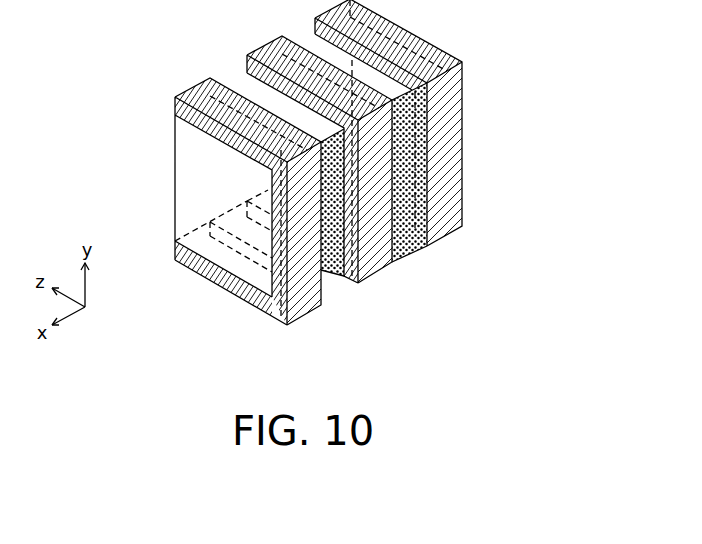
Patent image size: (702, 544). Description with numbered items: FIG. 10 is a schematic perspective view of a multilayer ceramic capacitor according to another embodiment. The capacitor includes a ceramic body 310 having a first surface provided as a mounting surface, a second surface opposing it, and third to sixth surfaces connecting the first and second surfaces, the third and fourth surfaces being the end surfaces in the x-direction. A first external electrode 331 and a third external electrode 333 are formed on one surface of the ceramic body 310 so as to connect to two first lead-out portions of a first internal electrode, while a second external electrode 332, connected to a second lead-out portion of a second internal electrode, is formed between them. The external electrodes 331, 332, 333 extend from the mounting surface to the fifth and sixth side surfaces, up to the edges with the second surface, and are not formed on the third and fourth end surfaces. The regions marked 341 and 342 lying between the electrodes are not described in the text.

The ceramic body 310 is at (185, 163).
The first external electrode 331 is at (287, 327).
The first electrode layer 341 is at (341, 281).
The second external electrode 332 is at (393, 264).
The second electrode layer 342 is at (410, 241).
The third external electrode 333 is at (463, 129).